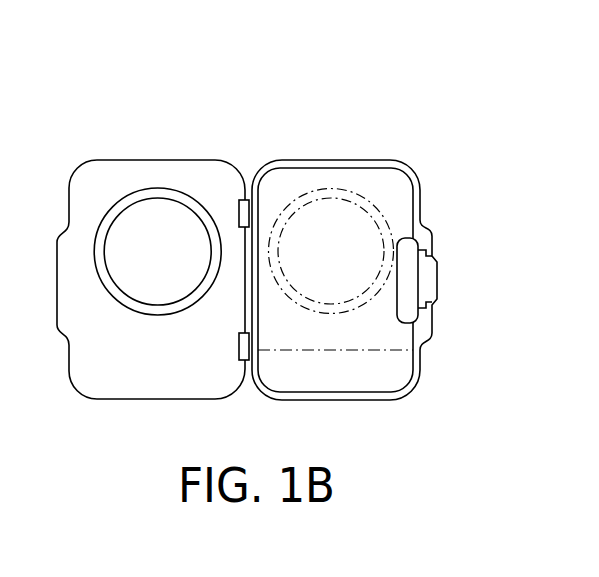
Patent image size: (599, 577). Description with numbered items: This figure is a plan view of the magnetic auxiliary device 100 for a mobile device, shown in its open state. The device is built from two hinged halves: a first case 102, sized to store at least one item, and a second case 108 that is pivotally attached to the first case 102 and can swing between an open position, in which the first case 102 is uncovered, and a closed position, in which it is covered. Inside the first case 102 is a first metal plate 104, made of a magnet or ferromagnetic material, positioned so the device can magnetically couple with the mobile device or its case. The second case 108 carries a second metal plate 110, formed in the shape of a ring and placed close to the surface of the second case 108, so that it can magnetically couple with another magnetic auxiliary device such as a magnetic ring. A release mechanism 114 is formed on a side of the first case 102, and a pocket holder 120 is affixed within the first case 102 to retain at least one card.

The magnetic auxiliary device 100 is at (433, 53).
The first case 102 is at (393, 190).
The first metal plate 104 is at (325, 190).
The second case 108 is at (88, 180).
The second metal plate 110 is at (156, 188).
The release mechanism 114 is at (437, 275).
The pocket holder 120 is at (382, 352).